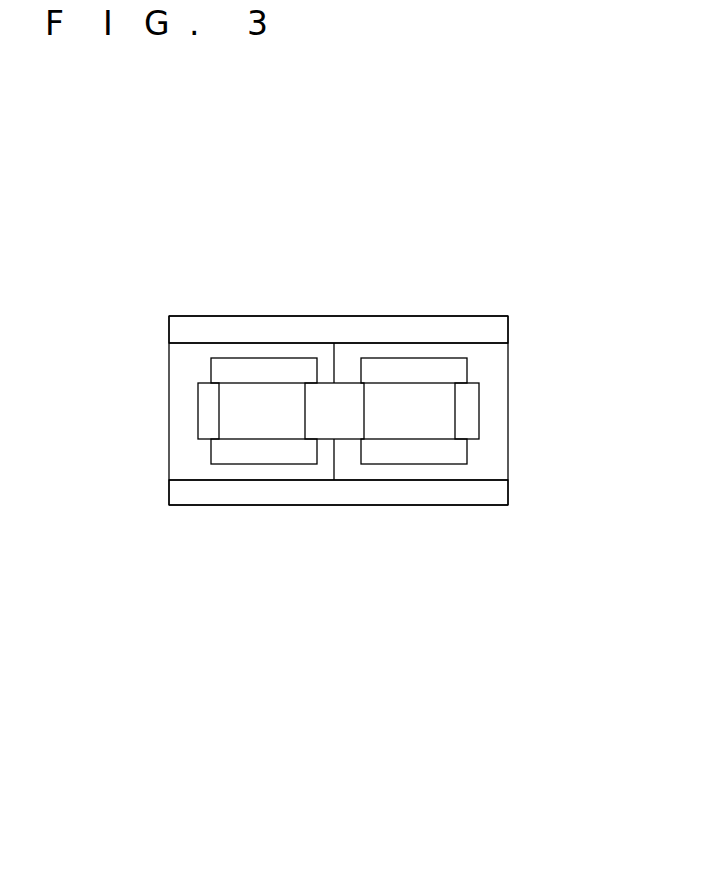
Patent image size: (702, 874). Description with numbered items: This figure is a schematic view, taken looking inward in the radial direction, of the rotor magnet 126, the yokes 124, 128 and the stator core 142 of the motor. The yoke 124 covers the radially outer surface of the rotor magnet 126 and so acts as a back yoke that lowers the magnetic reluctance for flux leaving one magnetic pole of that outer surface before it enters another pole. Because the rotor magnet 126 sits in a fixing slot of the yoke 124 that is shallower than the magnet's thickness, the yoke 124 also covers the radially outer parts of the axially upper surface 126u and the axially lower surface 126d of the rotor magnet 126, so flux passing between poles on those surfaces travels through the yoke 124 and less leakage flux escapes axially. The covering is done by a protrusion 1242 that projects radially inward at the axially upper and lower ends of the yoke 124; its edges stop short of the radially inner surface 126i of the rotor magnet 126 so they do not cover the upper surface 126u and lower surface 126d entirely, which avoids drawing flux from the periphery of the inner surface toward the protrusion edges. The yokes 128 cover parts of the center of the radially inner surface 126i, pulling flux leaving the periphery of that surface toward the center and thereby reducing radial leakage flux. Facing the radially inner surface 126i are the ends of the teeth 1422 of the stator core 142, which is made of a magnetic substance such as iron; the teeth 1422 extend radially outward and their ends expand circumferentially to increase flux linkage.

The yoke 124 is at (235, 325).
The protrusion 1242 is at (436, 330).
The rotor magnet 126 is at (182, 373).
The axially upper surface 126u is at (188, 326).
The axially lower surface 126d is at (202, 487).
The radially inner surface 126i is at (460, 465).
The yoke 128 is at (268, 368).
The stator core 142 is at (340, 387).
The teeth 1422 is at (427, 402).